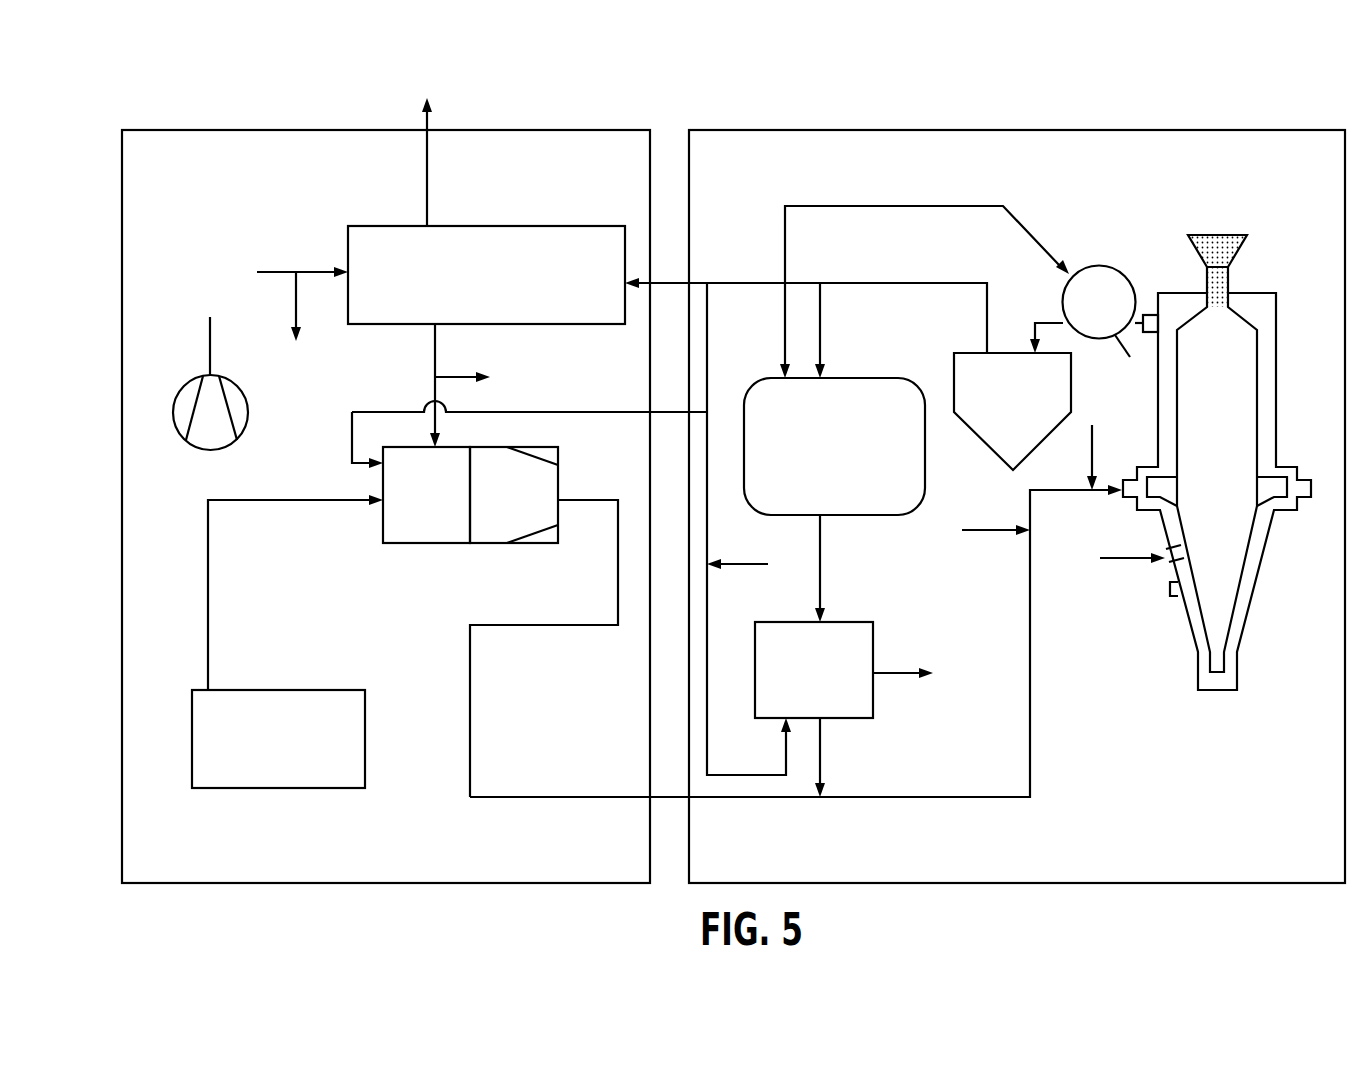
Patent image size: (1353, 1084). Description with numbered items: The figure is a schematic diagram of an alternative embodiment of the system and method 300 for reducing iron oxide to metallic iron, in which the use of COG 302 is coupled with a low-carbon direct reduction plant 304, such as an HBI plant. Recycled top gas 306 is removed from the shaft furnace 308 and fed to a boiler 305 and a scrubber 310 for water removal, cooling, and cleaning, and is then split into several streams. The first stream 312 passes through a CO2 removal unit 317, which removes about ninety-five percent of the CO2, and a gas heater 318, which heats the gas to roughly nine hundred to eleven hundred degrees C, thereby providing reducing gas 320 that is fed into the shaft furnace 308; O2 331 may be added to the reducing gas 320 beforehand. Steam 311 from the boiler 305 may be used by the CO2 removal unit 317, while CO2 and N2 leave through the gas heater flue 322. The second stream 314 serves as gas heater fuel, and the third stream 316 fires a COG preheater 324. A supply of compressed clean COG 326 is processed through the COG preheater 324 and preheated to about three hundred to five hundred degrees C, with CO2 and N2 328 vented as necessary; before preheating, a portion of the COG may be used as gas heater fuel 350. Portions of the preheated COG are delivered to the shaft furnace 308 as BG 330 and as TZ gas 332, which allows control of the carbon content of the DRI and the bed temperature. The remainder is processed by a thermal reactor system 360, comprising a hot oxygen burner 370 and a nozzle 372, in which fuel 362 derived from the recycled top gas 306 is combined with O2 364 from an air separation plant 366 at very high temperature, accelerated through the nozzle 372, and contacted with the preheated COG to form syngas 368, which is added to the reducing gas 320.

The system and method for reducing iron oxide to metallic iron 300 is at (797, 92).
The use of COG 302 is at (200, 130).
The direct reduction plant 304 is at (1243, 130).
The boiler 305 is at (1124, 276).
The recycled top gas 306 is at (1038, 322).
The shaft furnace 308 is at (1248, 292).
The scrubber 310 is at (1071, 393).
The steam 311 is at (1026, 228).
The first stream 312 is at (820, 332).
The second stream 314 is at (708, 435).
The third stream 316 is at (660, 282).
The CO2 removal unit 317 is at (850, 378).
The gas heater 318 is at (848, 622).
The reducing gas 320 is at (925, 797).
The gas heater flue 322 is at (970, 618).
The COG preheater 324 is at (470, 226).
The compressed clean COG 326 is at (186, 207).
The CO2 and N2 328 is at (465, 104).
The BG 330 is at (587, 349).
The O2 331 is at (1000, 532).
The TZ gas 332 is at (1130, 560).
The gas heater fuel 350 is at (295, 290).
The thermal reactor system 360 is at (478, 523).
The fuel 362 is at (354, 411).
The O2 364 is at (208, 590).
The air separation plant 366 is at (365, 740).
The syngas 368 is at (573, 797).
The hot oxygen burner 370 is at (383, 527).
The nozzle 372 is at (558, 533).